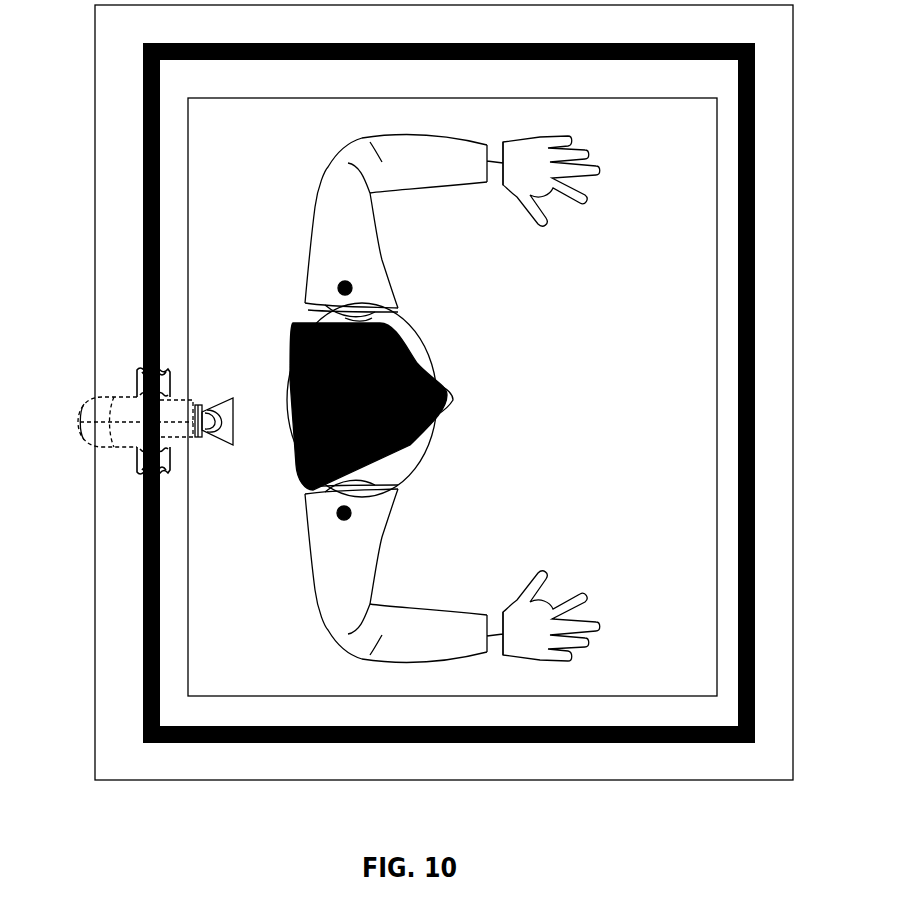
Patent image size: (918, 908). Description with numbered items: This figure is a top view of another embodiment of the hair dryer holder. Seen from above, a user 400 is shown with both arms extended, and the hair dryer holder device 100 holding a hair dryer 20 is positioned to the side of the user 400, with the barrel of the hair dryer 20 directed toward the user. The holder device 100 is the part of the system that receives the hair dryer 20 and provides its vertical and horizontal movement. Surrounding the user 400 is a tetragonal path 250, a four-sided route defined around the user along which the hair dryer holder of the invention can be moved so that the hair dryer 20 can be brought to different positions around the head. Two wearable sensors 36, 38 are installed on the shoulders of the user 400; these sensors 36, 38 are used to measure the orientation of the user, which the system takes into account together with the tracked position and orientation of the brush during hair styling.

The tetragonal path 250 is at (117, 113).
The hair dryer holder device 100 is at (137, 398).
The hair dryer 20 is at (220, 398).
The wearable sensor 36 is at (338, 287).
The wearable sensor 38 is at (352, 520).
The user 400 is at (412, 322).